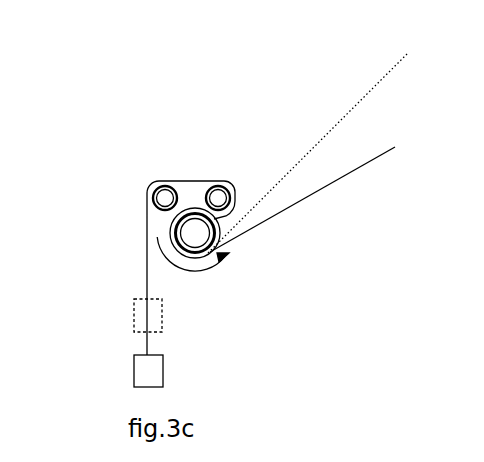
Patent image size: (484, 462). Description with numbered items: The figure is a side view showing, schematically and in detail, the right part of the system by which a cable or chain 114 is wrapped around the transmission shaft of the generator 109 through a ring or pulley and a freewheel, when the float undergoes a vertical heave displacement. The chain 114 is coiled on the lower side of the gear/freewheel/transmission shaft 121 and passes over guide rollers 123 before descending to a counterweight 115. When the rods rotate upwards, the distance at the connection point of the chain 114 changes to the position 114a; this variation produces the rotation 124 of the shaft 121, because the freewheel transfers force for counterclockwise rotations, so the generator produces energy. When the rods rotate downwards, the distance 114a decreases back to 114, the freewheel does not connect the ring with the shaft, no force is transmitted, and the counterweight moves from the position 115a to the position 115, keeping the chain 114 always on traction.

The transmission shaft of generator 109 is at (108, 200).
The deflection rollers 123 is at (203, 188).
The gear/freewheel/transmission shaft 121 is at (221, 226).
The rotary motion 124 is at (222, 278).
The cable or chain 114 is at (378, 148).
The cable or chain in varied-distance position 114a is at (345, 110).
The counterweight 115 is at (169, 365).
The counterweight in raised position 115a is at (170, 323).